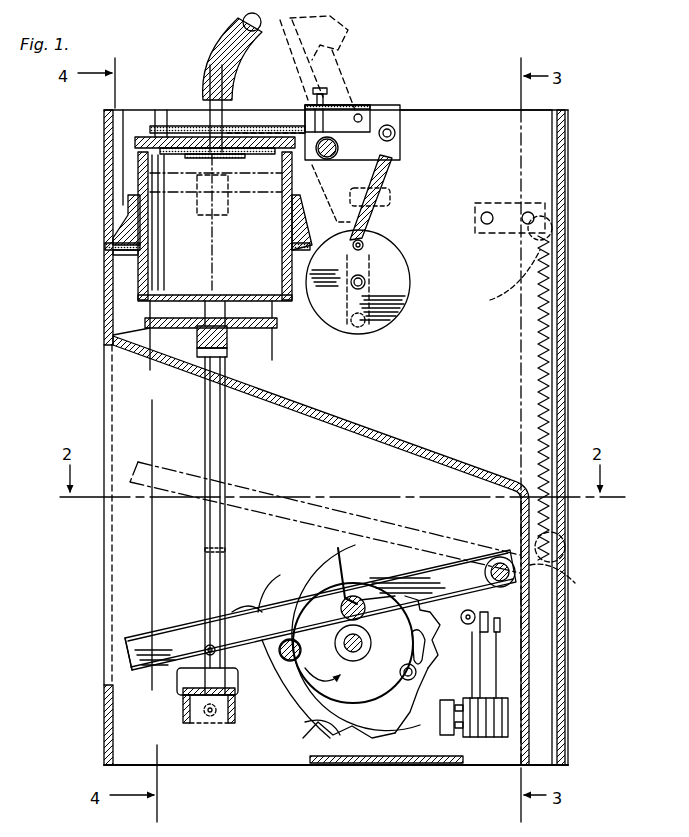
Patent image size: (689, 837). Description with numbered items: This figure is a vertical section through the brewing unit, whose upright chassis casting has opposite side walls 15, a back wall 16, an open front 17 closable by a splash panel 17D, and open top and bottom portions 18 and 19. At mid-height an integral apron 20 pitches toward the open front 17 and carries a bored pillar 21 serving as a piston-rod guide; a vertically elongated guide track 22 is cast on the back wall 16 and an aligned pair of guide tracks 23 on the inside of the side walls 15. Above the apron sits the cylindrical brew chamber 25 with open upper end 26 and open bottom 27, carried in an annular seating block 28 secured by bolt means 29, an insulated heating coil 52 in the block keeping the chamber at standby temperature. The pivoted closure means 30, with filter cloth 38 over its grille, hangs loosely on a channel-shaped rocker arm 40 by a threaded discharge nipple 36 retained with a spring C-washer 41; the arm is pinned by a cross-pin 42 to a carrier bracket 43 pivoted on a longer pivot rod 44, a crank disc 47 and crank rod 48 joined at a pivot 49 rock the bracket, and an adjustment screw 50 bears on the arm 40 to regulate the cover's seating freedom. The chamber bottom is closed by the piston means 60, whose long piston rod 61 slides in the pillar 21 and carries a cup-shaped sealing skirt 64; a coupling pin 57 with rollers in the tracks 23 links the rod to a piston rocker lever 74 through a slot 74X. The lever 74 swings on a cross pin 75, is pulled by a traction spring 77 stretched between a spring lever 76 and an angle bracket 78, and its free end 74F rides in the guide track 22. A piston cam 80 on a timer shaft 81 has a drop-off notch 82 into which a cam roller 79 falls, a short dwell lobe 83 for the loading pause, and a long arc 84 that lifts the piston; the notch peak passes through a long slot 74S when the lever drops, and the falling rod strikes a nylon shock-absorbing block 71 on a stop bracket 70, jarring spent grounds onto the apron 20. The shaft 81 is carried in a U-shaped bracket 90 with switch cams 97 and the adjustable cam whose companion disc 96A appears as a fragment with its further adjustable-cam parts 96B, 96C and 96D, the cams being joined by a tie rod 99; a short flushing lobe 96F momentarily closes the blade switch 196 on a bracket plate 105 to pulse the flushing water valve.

The side walls 15 is at (336, 142).
The back wall 16 is at (104, 158).
The open front 17 is at (540, 165).
The splash panel 17D is at (570, 320).
The open top portion 18 is at (441, 130).
The open bottom portion 19 is at (262, 766).
The apron 20 is at (435, 463).
The pillar 21 is at (227, 360).
The guide track 22 is at (104, 592).
The guide tracks 23 is at (230, 440).
The brew chamber 25 is at (138, 185).
The open upper end 26 is at (292, 170).
The open bottom 27 is at (162, 335).
The seating block 28 is at (123, 225).
The bolt means 29 is at (110, 247).
The pivoted closure means 30 is at (185, 132).
The threaded discharge nipple 36 is at (228, 100).
The filter cloth 38 is at (215, 154).
The rocker arm 40 is at (252, 130).
The spring C-washer 41 is at (232, 126).
The cross-pin 42 is at (370, 105).
The carrier bracket 43 is at (398, 106).
The pivot rod 44 is at (338, 148).
The crank disc 47 is at (398, 280).
The crank rod 48 is at (386, 214).
The pivot connection 49 is at (396, 134).
The adjustment screw 50 is at (326, 94).
The heating coil 52 is at (115, 262).
The coupling pin 57 is at (236, 610).
The piston means 60 is at (150, 334).
The piston rod 61 is at (224, 458).
The sealing skirt 64 is at (278, 324).
The stop bracket 70 is at (185, 712).
The shock-absorbing means 71 is at (190, 689).
The piston rocker lever 74 is at (172, 630).
The free end 74F is at (128, 645).
The long slot 74S is at (272, 600).
The slot 74X is at (217, 647).
The cross pin 75 is at (497, 560).
The spring lever 76 is at (558, 582).
The traction spring 77 is at (505, 305).
The angle bracket 78 is at (490, 236).
The cam roller 79 is at (373, 596).
The piston cam 80 is at (333, 576).
The timer shaft 81 is at (378, 668).
The drop-off notch 82 is at (346, 585).
The dwell lobe 83 is at (384, 612).
The long arc 84 is at (278, 662).
The U-shaped bracket 90 is at (419, 764).
The cam disc 96A is at (345, 766).
The cam portion 96B is at (310, 740).
The roller 96C is at (410, 684).
The pawl 96D is at (421, 644).
The flushing lobe 96F is at (442, 722).
The switch cam 97 is at (298, 722).
The tie rod 99 is at (292, 664).
The bracket plate 105 is at (470, 744).
The blade switch 196 is at (494, 632).